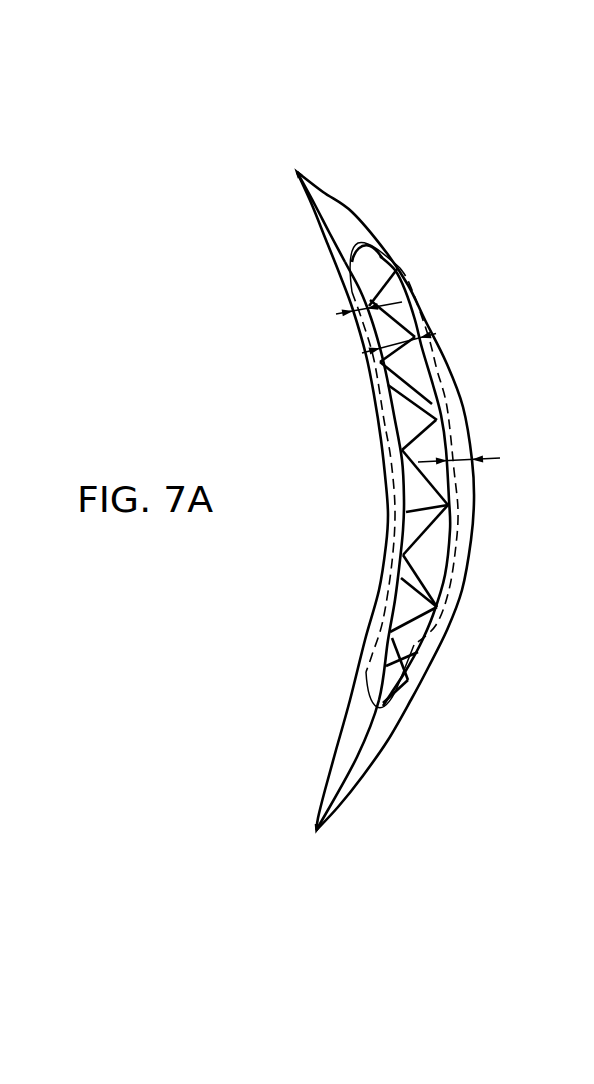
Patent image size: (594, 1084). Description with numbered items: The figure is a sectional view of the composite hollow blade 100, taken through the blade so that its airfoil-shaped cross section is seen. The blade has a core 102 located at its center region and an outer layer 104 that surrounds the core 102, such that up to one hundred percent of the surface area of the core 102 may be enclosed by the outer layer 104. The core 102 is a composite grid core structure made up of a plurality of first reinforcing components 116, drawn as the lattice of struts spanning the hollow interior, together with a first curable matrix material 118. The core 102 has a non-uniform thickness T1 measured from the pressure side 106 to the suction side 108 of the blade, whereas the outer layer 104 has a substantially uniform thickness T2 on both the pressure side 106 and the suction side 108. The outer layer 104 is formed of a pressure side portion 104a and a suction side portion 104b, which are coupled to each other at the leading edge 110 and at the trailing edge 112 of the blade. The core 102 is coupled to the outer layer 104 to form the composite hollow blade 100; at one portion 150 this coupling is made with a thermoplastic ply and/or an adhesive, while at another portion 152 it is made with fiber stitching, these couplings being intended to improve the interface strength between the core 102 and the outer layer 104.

The composite hollow blade 100 is at (138, 137).
The core 102 is at (376, 252).
The outer layer 104 is at (304, 217).
The pressure side portion 104a is at (325, 236).
The suction side portion 104b is at (377, 737).
The pressure side 106 is at (373, 413).
The suction side 108 is at (460, 396).
The leading edge 110 is at (297, 171).
The trailing edge 112 is at (318, 834).
The first reinforcing components 116 is at (420, 573).
The first curable matrix material 118 is at (417, 395).
The portion of the composite hollow blade 150 is at (399, 266).
The another portion of the composite hollow blade 152 is at (434, 624).
The non-uniform thickness of the core T1 is at (362, 352).
The substantially uniform thickness of the outer layer T2 is at (336, 314).